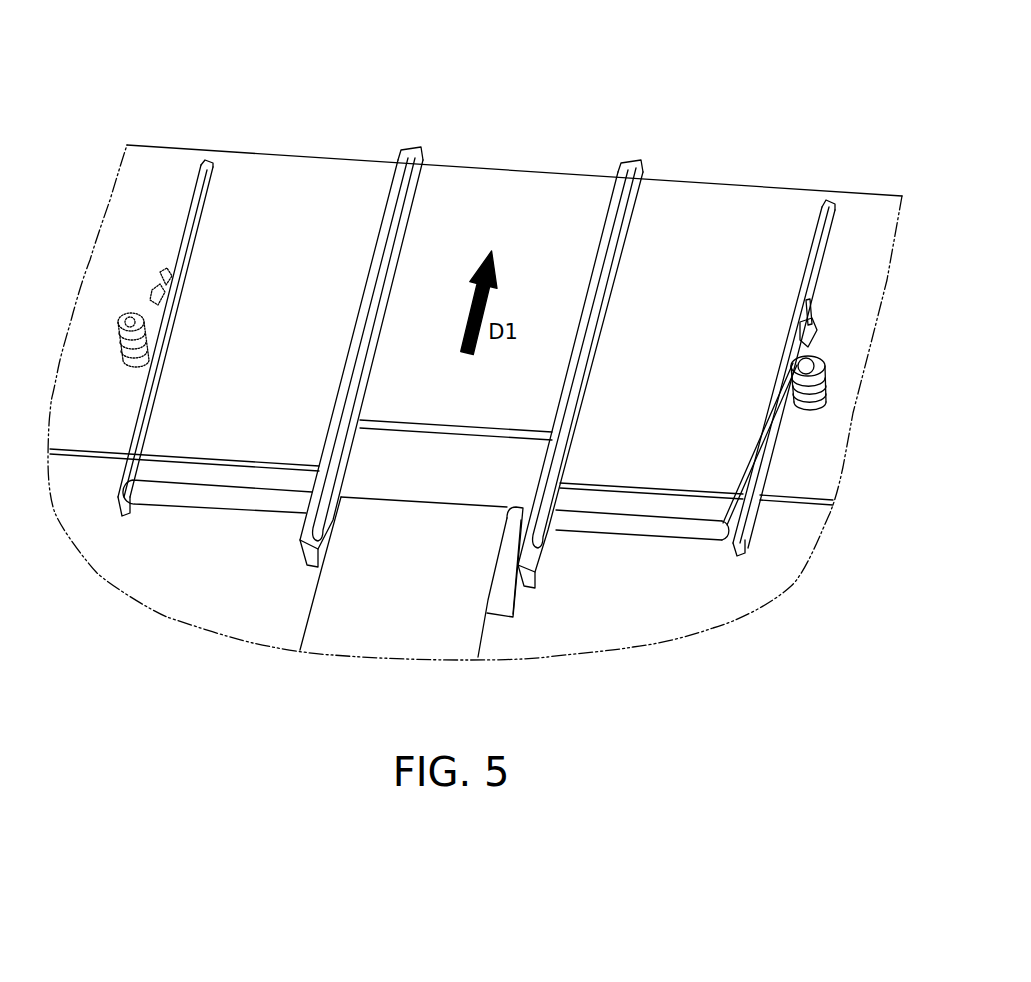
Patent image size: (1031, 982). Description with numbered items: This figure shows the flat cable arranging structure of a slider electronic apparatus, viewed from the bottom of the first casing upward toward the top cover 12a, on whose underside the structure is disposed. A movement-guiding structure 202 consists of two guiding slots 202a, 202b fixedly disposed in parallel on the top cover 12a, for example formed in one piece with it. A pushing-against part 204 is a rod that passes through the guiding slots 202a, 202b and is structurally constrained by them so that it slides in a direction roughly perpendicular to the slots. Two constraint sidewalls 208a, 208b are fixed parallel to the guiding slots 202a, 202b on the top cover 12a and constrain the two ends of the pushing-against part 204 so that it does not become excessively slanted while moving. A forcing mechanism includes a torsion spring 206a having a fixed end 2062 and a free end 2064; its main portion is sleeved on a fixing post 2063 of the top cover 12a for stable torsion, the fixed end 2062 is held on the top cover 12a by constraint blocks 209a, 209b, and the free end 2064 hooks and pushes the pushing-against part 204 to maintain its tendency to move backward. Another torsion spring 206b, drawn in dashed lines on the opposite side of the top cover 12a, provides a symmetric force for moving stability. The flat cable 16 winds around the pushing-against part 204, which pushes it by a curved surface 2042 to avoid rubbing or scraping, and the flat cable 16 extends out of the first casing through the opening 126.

The top cover 12a is at (288, 163).
The flat cable 16 is at (412, 632).
The opening 126 is at (380, 475).
The movement-guiding structure 202 is at (622, 75).
The guiding slot 202a is at (613, 176).
The guiding slot 202b is at (423, 147).
The pushing-against part 204 is at (441, 560).
The curved surface 2042 is at (523, 517).
The torsion spring 206a is at (842, 424).
The torsion spring 206b is at (107, 308).
The fixed end 2062 is at (808, 302).
The fixing post 2063 is at (790, 370).
The free end 2064 is at (757, 520).
The constraint sidewall 208a is at (820, 213).
The constraint sidewall 208b is at (200, 173).
The constraint block 209a is at (800, 307).
The constraint block 209b is at (803, 330).